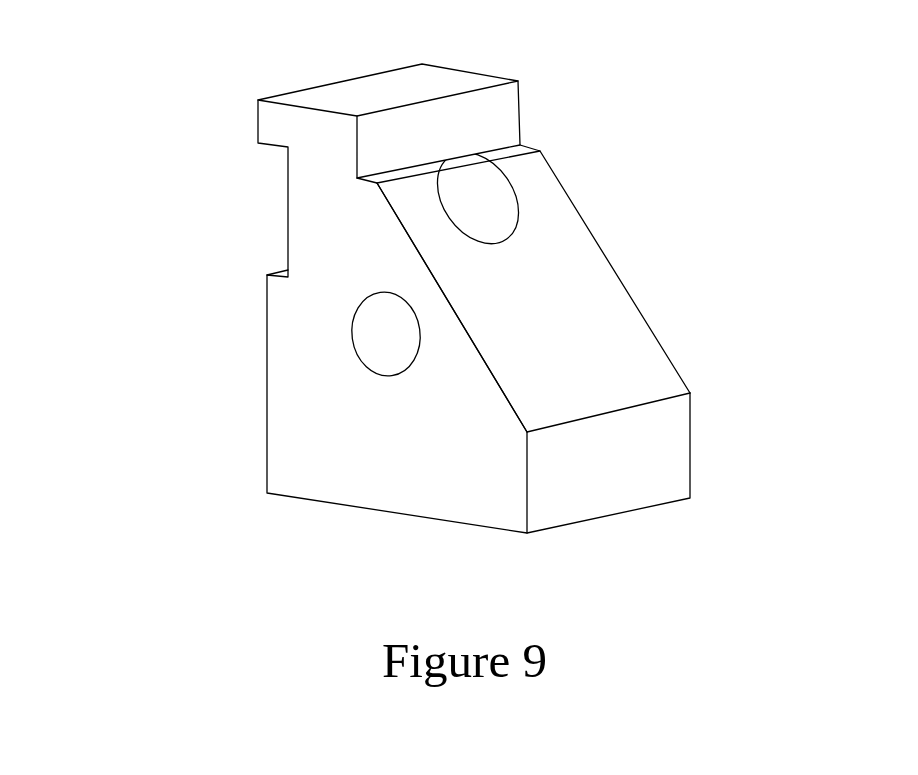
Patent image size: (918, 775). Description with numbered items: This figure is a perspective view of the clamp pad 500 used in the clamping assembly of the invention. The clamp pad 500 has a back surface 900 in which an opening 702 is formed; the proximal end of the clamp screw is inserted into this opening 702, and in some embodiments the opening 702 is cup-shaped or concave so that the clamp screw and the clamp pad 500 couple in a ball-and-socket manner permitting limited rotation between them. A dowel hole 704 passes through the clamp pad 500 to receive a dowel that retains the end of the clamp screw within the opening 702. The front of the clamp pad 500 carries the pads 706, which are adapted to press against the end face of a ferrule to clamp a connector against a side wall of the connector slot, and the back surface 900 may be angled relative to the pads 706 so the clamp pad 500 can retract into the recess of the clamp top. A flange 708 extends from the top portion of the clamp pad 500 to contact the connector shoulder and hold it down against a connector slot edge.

The clamp pad 500 is at (190, 387).
The opening 702 is at (490, 205).
The dowel holes 704 is at (382, 360).
The pads 706 is at (265, 417).
The flange 708 is at (282, 117).
The back surface 900 is at (587, 300).